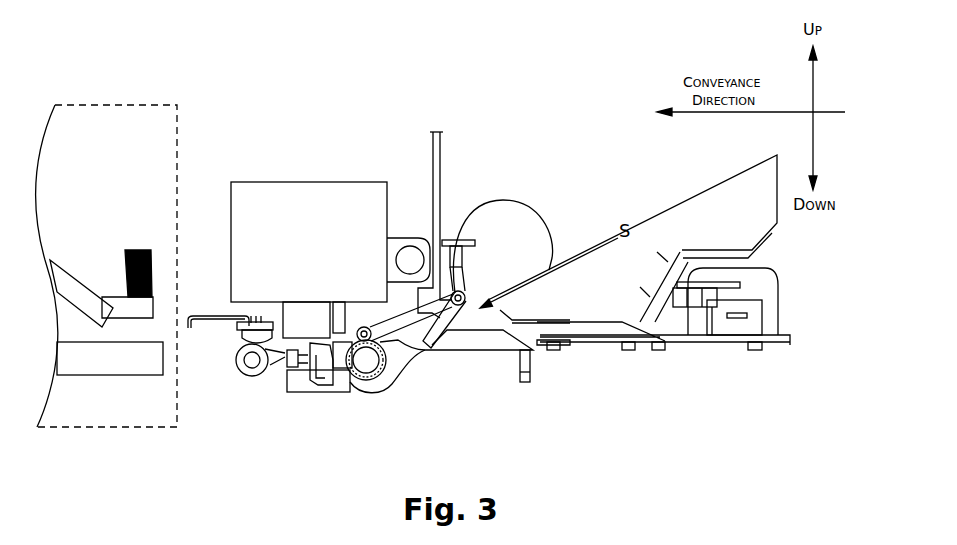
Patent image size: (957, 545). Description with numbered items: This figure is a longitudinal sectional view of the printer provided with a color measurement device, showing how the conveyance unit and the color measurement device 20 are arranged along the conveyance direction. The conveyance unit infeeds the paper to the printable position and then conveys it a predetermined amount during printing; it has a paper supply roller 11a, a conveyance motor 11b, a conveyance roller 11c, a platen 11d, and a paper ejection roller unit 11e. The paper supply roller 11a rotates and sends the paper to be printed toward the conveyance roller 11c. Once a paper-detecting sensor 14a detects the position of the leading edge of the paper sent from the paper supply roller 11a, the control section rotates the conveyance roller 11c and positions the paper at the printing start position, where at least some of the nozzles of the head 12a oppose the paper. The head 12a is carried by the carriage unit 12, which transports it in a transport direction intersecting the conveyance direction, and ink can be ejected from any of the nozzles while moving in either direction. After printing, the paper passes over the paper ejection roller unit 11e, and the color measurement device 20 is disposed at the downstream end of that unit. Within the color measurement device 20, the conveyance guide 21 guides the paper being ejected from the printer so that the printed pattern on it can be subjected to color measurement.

The color measurement device 20 is at (180, 157).
The conveyance guide 21 is at (118, 367).
The carriage unit 12 is at (319, 176).
The head 12a is at (300, 312).
The paper supply roller 11a is at (515, 212).
The conveyance motor 11b is at (390, 368).
The conveyance roller 11c is at (363, 365).
The platen 11d is at (313, 358).
The paper ejection roller unit 11e is at (237, 377).
The paper-detecting sensor 14a is at (446, 315).